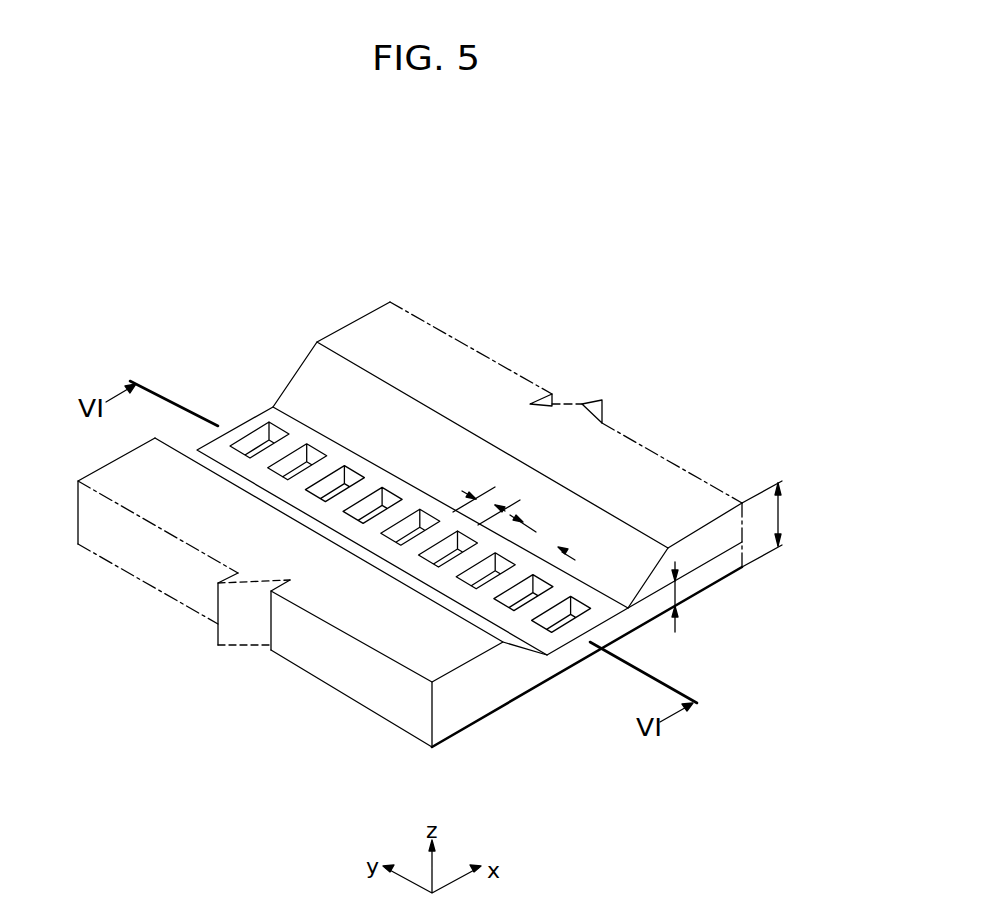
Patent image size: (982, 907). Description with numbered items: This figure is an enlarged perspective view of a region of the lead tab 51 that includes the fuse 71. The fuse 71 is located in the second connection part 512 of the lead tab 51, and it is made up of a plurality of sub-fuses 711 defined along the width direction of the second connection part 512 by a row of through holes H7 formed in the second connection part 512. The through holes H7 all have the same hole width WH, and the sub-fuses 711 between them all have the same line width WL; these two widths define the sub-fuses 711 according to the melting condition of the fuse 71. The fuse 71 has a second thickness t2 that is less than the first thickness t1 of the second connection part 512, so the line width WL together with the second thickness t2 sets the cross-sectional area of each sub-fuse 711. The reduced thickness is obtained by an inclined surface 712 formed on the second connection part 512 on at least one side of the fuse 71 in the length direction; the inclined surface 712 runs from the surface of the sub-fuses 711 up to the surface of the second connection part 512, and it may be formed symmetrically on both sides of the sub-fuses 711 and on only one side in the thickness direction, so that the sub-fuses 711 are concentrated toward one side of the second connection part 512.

The lead tab 51 is at (410, 524).
The second connection part 512 is at (629, 465).
The inclined surface 712 is at (437, 452).
The fuse 71 is at (412, 508).
The sub-fuses 711 is at (400, 440).
The through holes H7 is at (338, 487).
The first thickness t1 is at (774, 524).
The second thickness t2 is at (686, 605).
The line width WL is at (486, 501).
The hole width WH is at (545, 533).